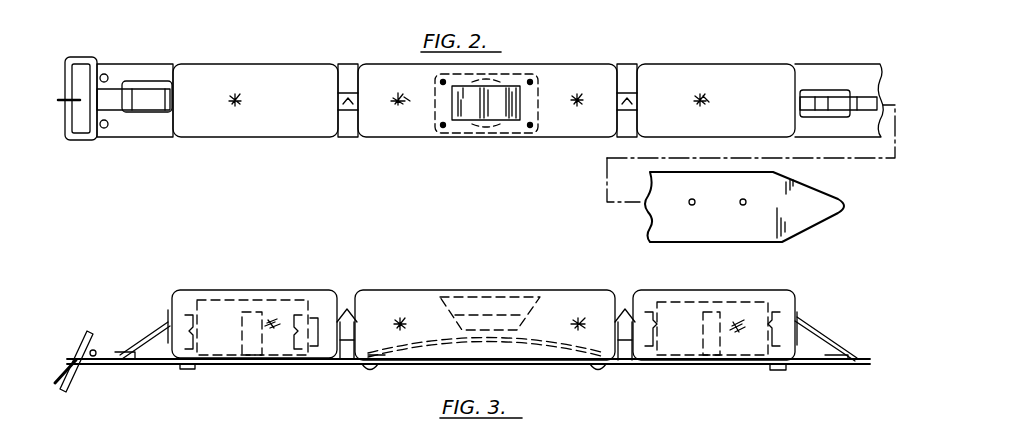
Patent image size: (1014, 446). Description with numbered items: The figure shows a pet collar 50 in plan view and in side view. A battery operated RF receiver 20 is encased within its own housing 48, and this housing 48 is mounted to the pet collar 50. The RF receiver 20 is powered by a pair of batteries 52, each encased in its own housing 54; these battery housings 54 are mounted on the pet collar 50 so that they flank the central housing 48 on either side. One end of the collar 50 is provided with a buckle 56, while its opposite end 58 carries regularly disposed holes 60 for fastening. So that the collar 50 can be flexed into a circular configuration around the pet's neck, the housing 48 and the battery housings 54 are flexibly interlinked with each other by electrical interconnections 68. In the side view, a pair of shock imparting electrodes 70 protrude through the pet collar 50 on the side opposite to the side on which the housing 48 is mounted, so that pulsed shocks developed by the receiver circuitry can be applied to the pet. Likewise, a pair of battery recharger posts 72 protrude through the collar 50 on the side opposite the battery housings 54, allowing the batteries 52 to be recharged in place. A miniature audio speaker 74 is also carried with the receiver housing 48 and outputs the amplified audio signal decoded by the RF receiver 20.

In FIG. 2, the RF receiver 20 is at (348, 50).
In FIG. 3, the RF receiver 20 is at (422, 278).
In FIG. 2, the housing 48 is at (578, 72).
In FIG. 3, the housing 48 is at (568, 298).
In FIG. 2, the pet collar 50 is at (150, 135).
In FIG. 3, the pet collar 50 is at (160, 366).
In FIG. 3, the batteries 52 is at (238, 298).
In FIG. 2, the battery housings 54 is at (268, 134).
In FIG. 3, the battery housings 54 is at (295, 290).
In FIG. 2, the buckle 56 is at (78, 144).
In FIG. 3, the buckle 56 is at (90, 335).
In FIG. 2, the opposite end 58 is at (826, 226).
In FIG. 2, the holes 60 is at (742, 205).
In FIG. 2, the electrical interconnections 68 is at (350, 134).
In FIG. 3, the electrical interconnections 68 is at (345, 310).
In FIG. 3, the shock imparting electrodes 70 is at (366, 372).
In FIG. 3, the battery recharger posts 72 is at (188, 370).
In FIG. 2, the miniature audio speaker 74 is at (438, 110).
In FIG. 3, the miniature audio speaker 74 is at (500, 300).